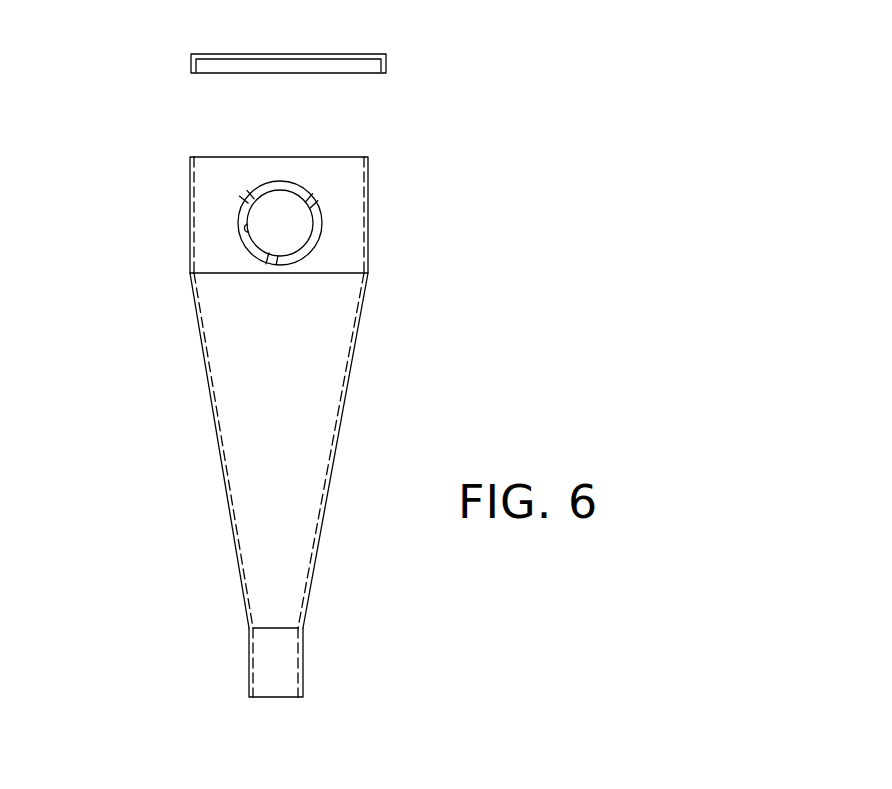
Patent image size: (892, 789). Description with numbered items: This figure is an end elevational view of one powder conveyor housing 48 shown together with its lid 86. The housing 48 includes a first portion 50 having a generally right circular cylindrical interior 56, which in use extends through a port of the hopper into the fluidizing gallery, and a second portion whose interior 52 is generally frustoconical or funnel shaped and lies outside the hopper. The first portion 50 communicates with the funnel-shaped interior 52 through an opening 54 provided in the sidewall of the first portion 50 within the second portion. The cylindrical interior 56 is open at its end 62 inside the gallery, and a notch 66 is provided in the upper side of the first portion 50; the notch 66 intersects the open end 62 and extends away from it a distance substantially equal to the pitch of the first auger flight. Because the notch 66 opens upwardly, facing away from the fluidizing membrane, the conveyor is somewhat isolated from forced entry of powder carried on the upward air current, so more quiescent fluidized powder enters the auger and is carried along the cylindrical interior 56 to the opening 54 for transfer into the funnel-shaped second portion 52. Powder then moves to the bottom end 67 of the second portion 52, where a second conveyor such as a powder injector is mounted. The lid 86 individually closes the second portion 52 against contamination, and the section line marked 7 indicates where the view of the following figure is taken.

The section line 7- 7 is at (118, 154).
The powder conveyor housing 48 is at (124, 438).
The first portion 50 is at (322, 210).
The second portion having funnel-shaped interior 52 is at (350, 379).
The opening 54 is at (299, 270).
The right circular cylindrical interior 56 is at (243, 231).
The end 62 is at (291, 196).
The notch 66 is at (250, 192).
The bottom end 67 is at (249, 656).
The lid 86 is at (288, 54).